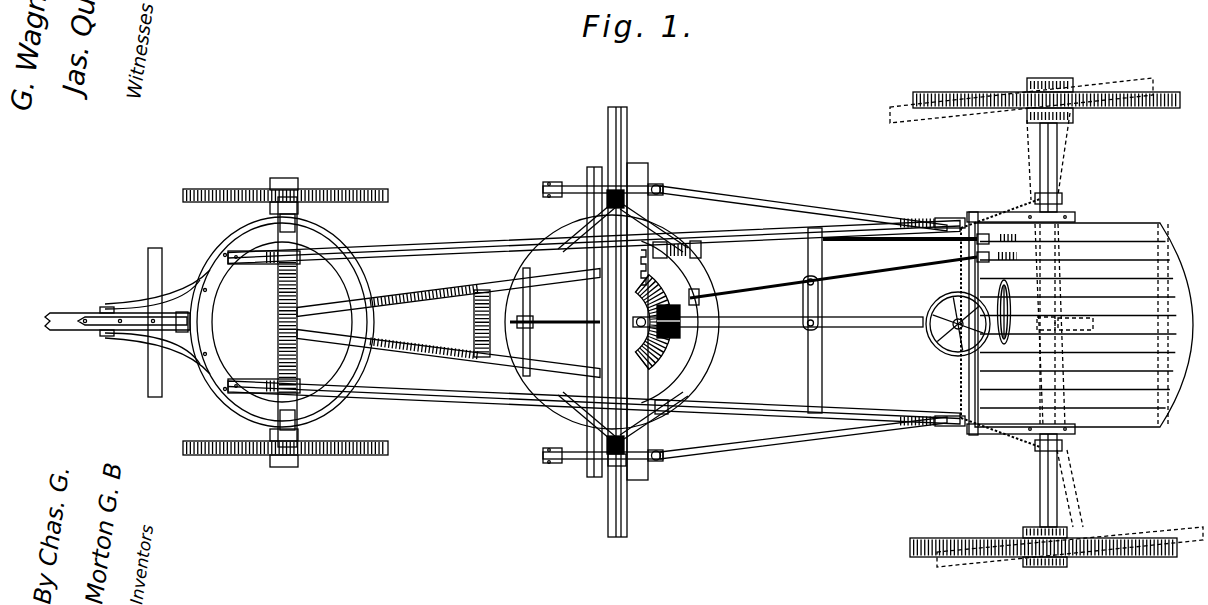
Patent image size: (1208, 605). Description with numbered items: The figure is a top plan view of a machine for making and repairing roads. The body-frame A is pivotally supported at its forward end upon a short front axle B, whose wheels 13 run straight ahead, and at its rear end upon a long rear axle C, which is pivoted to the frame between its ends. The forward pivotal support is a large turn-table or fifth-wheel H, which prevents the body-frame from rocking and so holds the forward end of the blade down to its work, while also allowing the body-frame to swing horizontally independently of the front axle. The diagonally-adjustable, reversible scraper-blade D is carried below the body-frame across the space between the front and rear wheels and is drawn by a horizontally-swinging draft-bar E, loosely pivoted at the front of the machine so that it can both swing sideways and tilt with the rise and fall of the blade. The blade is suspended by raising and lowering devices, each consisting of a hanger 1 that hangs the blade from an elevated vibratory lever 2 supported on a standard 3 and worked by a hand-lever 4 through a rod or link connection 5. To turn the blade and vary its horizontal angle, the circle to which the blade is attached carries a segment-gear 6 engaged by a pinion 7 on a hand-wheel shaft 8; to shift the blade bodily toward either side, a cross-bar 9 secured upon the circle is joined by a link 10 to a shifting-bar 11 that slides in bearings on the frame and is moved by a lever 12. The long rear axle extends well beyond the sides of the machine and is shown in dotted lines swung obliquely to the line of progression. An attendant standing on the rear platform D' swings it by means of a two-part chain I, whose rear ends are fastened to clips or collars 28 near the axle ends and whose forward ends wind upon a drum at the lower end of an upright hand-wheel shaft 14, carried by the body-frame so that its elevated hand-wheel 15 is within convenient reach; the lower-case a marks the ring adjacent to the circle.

The hanger 1 is at (583, 186).
The vibratory lever 2 is at (642, 188).
The standard 3 is at (652, 226).
The hand-lever 4 is at (940, 222).
The rod or link connection 5 is at (803, 327).
The segment-gear 6 is at (658, 350).
The pinion 7 is at (675, 338).
The hand-wheel shaft 8 is at (870, 318).
The cross-bar 9 is at (603, 478).
The link 10 is at (598, 383).
The shifting-bar 11 is at (640, 394).
The lever 12 is at (770, 330).
The wheels 13 is at (285, 311).
The hand-wheel shaft 14 is at (940, 338).
The hand-wheel 15 is at (932, 330).
The clips or collars 28 is at (1022, 456).
The body-frame A is at (383, 426).
The front axle B is at (292, 432).
The rear axle C is at (1021, 325).
The scraper-blade D is at (600, 341).
The rear platform D' is at (1084, 331).
The draft-bar E is at (415, 331).
The turn-table or fifth-wheel H is at (282, 322).
The two-part chain I is at (940, 282).
The inner ring a is at (692, 386).